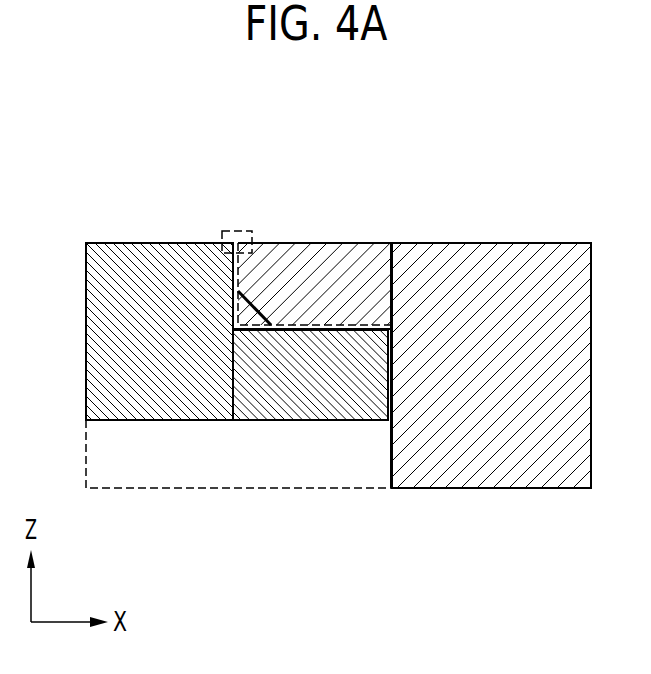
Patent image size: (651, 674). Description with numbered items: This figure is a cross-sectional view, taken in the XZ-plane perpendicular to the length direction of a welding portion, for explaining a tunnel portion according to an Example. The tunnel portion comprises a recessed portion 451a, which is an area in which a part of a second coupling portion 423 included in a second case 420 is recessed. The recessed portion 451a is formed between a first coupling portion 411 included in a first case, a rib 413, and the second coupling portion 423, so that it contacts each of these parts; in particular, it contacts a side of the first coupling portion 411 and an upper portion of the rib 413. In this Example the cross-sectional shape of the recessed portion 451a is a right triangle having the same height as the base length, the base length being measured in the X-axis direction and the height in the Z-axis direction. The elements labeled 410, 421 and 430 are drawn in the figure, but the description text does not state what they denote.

The first structure 410 is at (146, 226).
The first coupling portion 411 is at (143, 421).
The rib 413 is at (300, 421).
The second case 420 is at (499, 226).
The first layer of second structure 421 is at (427, 243).
The second coupling portion 423 is at (356, 243).
The bonding layer 430 is at (237, 229).
The recessed portion 451a is at (257, 307).